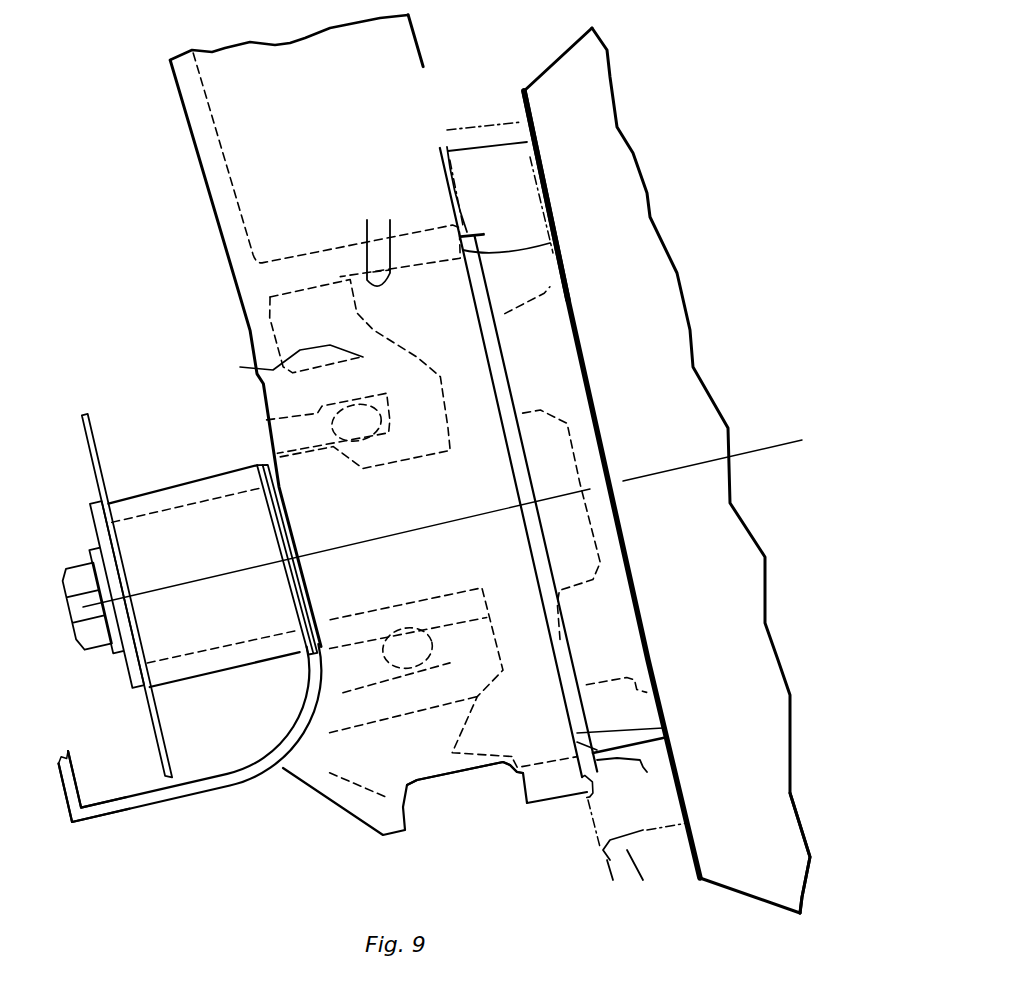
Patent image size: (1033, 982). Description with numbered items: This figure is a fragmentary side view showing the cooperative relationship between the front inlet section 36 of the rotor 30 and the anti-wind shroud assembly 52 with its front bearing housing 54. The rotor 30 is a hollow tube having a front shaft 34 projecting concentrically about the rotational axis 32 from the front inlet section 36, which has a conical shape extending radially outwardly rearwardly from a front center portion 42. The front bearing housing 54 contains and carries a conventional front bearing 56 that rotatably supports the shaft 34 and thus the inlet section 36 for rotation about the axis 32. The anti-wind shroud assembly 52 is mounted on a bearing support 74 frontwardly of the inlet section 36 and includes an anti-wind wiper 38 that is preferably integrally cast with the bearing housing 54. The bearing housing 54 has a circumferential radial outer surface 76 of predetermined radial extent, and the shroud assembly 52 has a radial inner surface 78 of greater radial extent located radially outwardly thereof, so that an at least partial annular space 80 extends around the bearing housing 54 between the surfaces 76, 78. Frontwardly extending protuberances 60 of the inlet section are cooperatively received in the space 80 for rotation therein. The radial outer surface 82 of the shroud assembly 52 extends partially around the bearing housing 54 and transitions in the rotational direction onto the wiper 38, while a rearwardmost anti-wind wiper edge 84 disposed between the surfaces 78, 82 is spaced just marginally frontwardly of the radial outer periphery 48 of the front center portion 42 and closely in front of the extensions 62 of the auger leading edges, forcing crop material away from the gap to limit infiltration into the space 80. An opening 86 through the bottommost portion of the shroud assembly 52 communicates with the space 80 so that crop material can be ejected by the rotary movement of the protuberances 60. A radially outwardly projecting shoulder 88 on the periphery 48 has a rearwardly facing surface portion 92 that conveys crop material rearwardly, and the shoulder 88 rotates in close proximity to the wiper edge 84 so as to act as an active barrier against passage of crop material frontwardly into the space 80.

The rotor 30 is at (568, 48).
The front inlet section 36 is at (570, 150).
The front center portion 42 is at (740, 895).
The anti-wind wiper 38 is at (205, 180).
The radial outer surface 82 is at (270, 100).
The shoulder 88 is at (453, 143).
The radial outer periphery 48 is at (510, 247).
The extensions 62 is at (520, 123).
The anti-wind shroud assembly 52 is at (305, 798).
The bearing support 74 is at (63, 808).
The rotational axis 32 is at (167, 587).
The front shaft 34 is at (213, 650).
The annular space 80 is at (300, 302).
The front bearing housing 54 is at (240, 367).
The front bearing 56 is at (320, 425).
The radial outer surface of bearing housing 76 is at (347, 840).
The protuberances 60 is at (377, 308).
The radial inner surface 78 is at (367, 270).
The opening 86 is at (418, 815).
The anti-wind wiper edge 84 is at (577, 733).
The rearwardly facing surface portion 92 is at (647, 772).